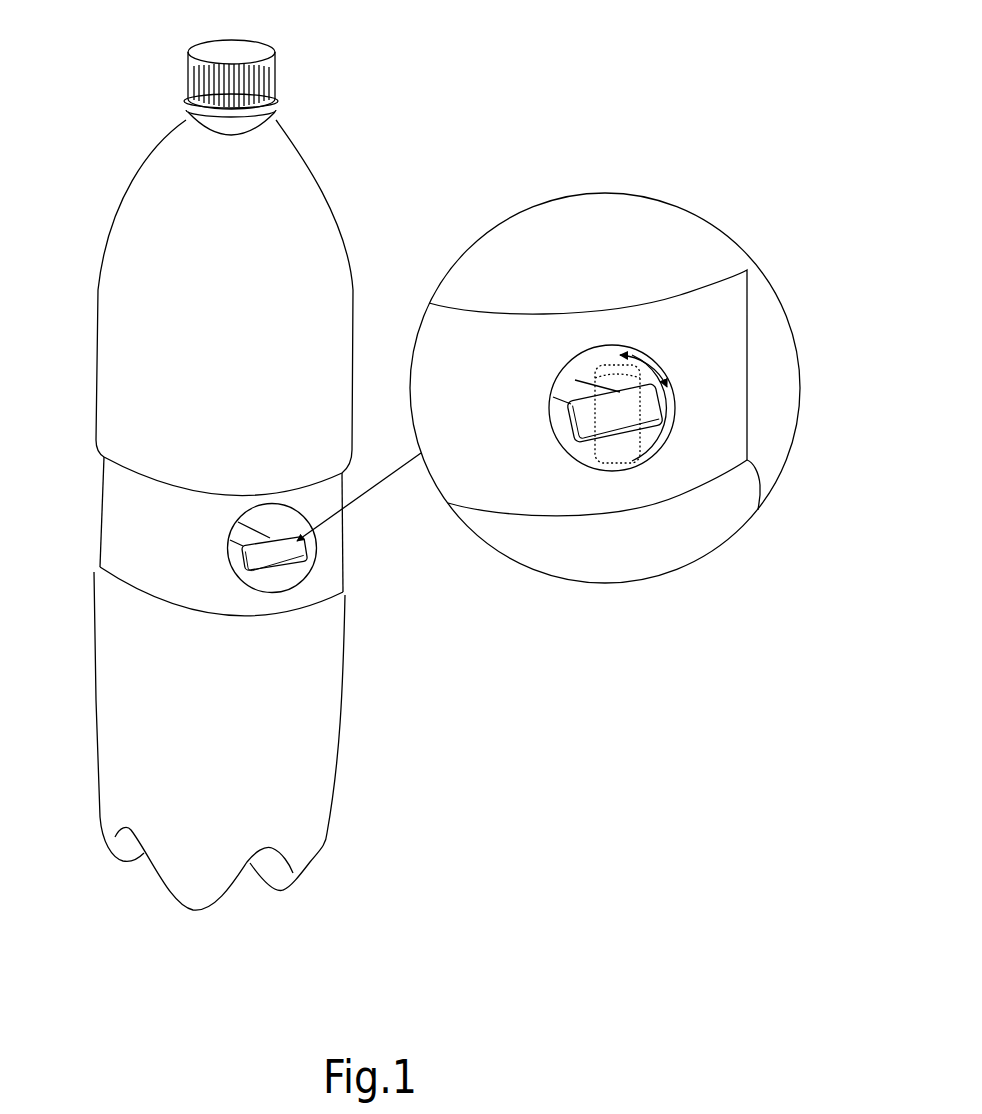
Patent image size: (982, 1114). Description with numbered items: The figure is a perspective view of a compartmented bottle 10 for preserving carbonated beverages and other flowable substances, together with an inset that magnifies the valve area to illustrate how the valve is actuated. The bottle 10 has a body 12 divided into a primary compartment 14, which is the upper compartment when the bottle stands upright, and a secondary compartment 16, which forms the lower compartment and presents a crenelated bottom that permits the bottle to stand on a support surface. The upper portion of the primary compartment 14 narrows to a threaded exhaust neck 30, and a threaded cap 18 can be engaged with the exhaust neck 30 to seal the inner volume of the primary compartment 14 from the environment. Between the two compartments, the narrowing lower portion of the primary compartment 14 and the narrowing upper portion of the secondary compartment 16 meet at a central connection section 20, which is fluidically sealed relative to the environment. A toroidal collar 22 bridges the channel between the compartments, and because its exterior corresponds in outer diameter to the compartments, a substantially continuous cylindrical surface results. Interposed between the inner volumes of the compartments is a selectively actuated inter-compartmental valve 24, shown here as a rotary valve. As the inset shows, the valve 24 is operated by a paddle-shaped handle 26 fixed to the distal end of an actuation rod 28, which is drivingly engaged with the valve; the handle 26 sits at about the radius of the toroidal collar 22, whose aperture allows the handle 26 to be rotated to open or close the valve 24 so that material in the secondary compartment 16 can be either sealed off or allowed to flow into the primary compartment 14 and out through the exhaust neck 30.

The compartmented bottle 10 is at (330, 100).
The body 12 is at (298, 238).
The primary compartment 14 is at (143, 362).
The secondary compartment 16 is at (287, 742).
The cap 18 is at (198, 72).
The central connection section 20 is at (145, 522).
The toroidal collar 22 is at (182, 560).
The inter-compartmental valve 24 is at (287, 563).
The paddle-shaped handle 26 is at (650, 408).
The actuation rod 28 is at (572, 378).
The exhaust neck 30 is at (195, 108).